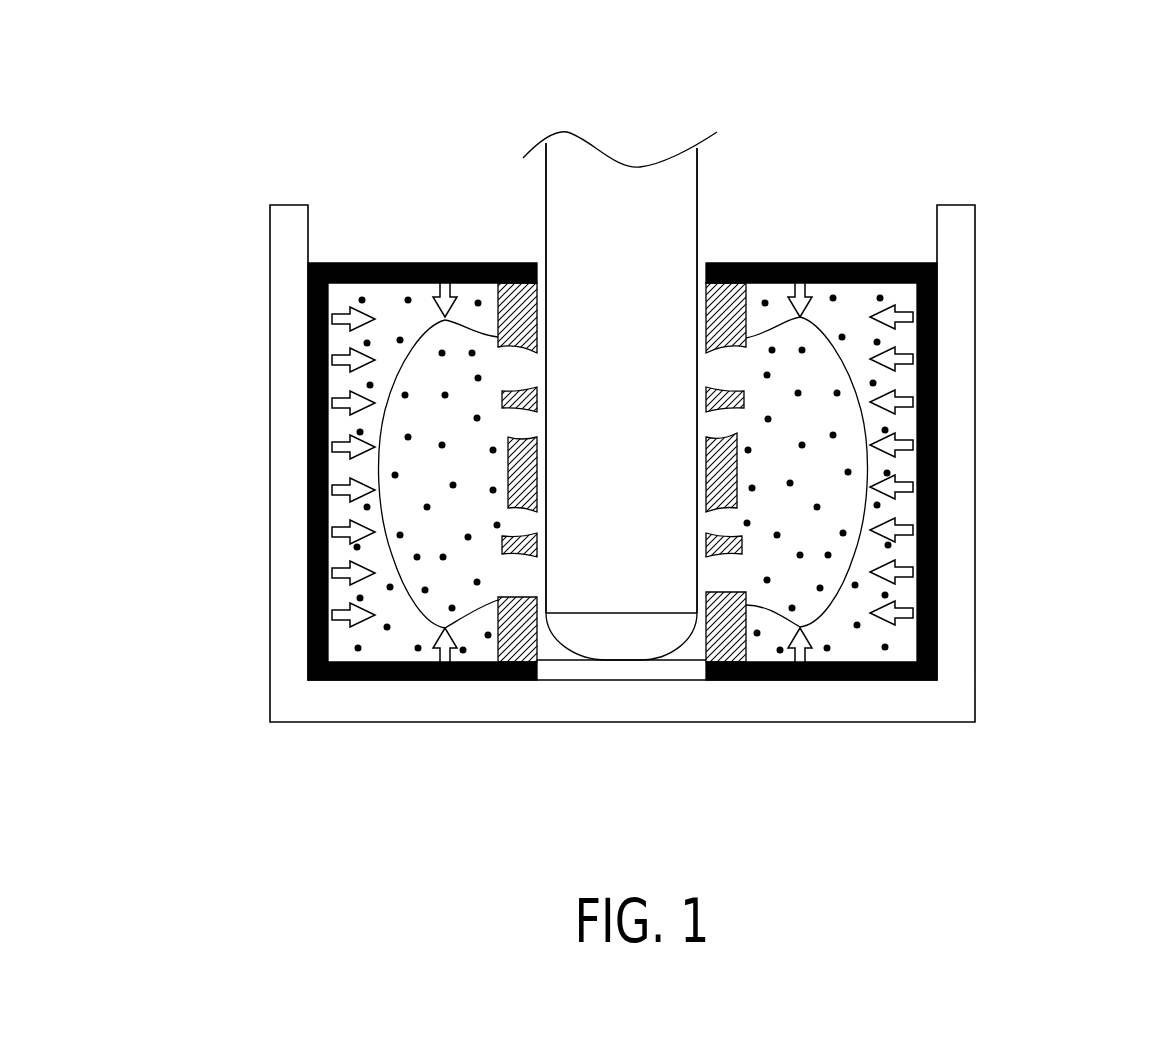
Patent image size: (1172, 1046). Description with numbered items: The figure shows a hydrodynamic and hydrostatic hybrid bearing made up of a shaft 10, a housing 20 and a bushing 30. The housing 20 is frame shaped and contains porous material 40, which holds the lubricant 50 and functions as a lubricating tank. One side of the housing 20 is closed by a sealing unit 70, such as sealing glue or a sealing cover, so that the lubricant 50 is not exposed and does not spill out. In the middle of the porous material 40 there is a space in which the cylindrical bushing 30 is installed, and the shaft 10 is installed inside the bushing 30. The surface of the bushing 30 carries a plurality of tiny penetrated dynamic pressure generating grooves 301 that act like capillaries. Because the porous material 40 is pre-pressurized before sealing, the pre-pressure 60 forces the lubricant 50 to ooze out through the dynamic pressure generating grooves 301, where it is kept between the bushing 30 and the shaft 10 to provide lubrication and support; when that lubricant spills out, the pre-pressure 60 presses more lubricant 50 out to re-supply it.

The shaft 10 is at (612, 196).
The housing 20 is at (772, 721).
The bushing 30 is at (515, 645).
The dynamic pressure generating grooves 301 is at (732, 578).
The porous material 40 is at (873, 632).
The lubricant 50 is at (540, 578).
The pre-pressure 60 is at (307, 308).
The sealing unit 70 is at (830, 263).